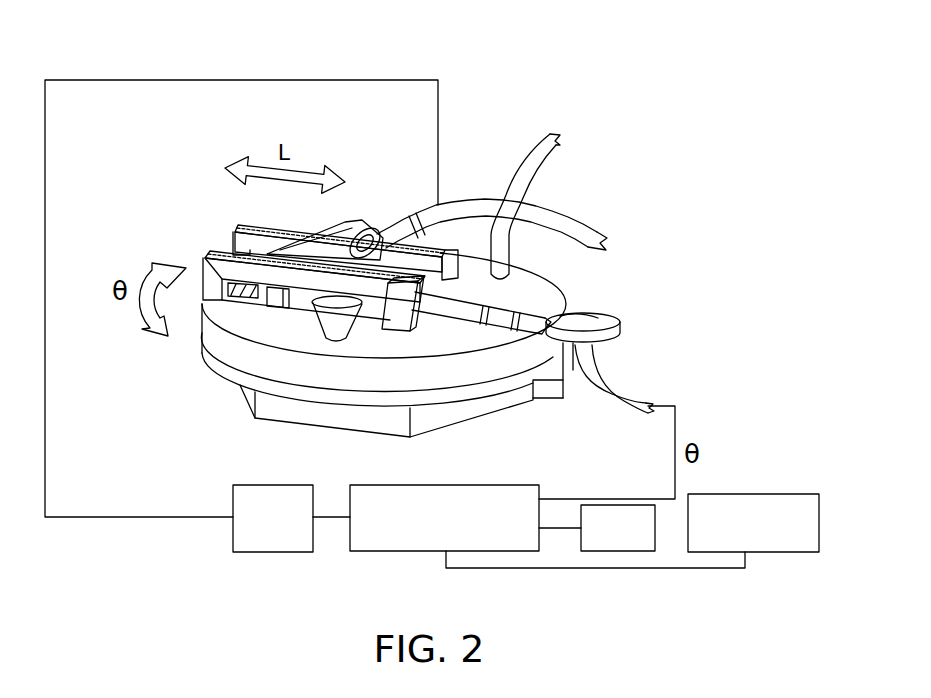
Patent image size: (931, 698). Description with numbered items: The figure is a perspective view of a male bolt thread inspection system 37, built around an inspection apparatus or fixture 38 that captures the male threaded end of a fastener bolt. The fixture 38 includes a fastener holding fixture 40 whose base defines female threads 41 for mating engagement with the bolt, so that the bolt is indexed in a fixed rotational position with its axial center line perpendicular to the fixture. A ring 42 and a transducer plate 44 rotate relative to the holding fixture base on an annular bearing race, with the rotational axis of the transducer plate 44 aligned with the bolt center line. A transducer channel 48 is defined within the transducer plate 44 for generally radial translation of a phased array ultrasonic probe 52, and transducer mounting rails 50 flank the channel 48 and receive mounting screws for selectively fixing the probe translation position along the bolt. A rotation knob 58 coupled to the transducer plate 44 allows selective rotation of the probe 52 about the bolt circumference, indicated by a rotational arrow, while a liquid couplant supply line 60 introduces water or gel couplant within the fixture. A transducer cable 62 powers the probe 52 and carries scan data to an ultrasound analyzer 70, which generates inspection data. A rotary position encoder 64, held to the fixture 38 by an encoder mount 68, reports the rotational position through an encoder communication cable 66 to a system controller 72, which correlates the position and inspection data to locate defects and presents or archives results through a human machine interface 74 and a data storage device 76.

The male bolt thread inspection system 37 is at (63, 556).
The inspection apparatus or fixture 38 is at (214, 426).
The fastener holding fixture 40 is at (392, 412).
The female threads 41 is at (396, 272).
The ring 42 is at (222, 338).
The transducer plate 44 is at (545, 287).
The transducer channel 48 is at (471, 303).
The transducer mounting rails 50 is at (234, 233).
The phased array ultrasonic probe or transducer 52 is at (343, 225).
The rotation knob 58 is at (328, 318).
The liquid couplant supply line 60 is at (530, 163).
The transducer cable 62 is at (90, 80).
The rotary position encoder 64 is at (593, 330).
The encoder communication cable 66 is at (623, 405).
The encoder mount 68 is at (568, 393).
The ultrasound analyzer 70 is at (242, 538).
The system controller 72 is at (373, 537).
The human machine interface (HMI) 74 is at (581, 542).
The data storage device 76 is at (797, 500).